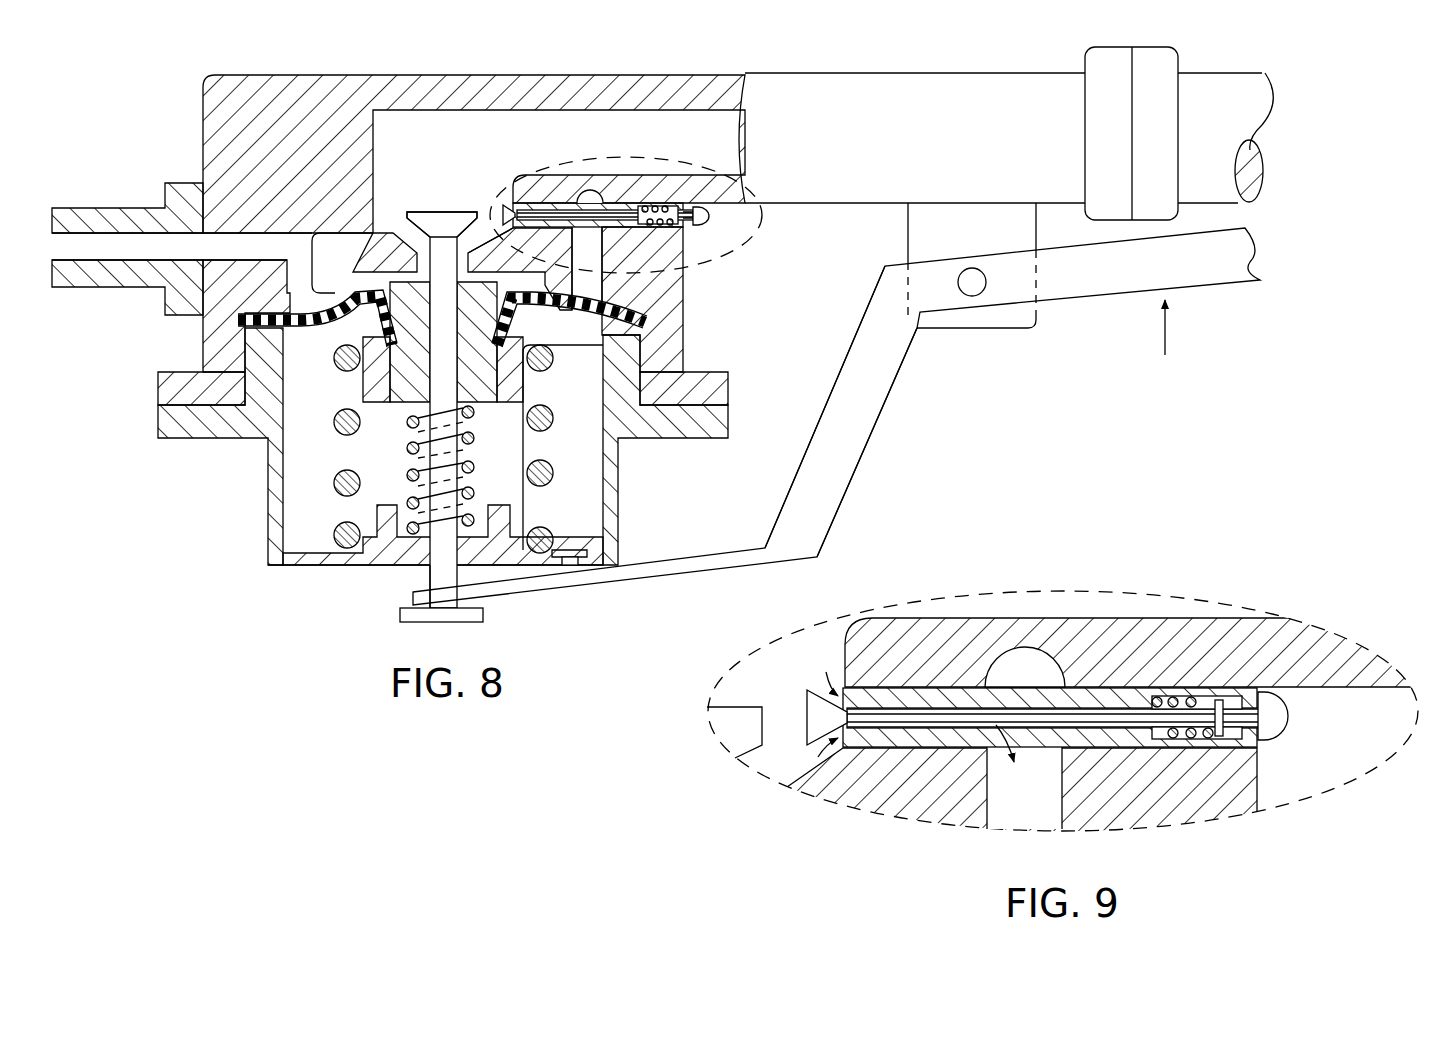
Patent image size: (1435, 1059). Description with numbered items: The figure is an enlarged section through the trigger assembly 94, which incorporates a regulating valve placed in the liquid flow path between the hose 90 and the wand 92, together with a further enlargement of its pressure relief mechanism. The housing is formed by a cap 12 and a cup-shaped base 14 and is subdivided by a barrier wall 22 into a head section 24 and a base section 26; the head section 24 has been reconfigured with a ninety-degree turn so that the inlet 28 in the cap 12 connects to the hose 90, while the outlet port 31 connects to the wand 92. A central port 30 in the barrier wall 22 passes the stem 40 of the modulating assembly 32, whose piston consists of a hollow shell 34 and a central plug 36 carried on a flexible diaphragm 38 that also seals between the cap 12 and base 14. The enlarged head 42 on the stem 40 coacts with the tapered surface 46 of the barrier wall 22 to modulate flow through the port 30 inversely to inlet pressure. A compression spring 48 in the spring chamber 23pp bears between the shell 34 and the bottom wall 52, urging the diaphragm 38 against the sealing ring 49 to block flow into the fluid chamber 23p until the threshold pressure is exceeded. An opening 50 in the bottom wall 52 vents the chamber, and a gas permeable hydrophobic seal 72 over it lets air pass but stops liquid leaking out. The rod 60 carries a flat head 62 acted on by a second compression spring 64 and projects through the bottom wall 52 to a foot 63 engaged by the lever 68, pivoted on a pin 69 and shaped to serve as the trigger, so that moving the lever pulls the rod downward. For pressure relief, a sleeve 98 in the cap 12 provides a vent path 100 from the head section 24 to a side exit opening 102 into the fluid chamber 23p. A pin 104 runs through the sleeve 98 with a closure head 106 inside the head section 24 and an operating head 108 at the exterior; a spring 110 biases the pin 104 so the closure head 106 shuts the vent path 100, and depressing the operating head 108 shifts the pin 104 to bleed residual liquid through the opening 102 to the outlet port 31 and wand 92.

In FIG. 8, the cap 12 is at (205, 130).
In FIG. 8, the base 14 is at (268, 517).
In FIG. 8, the barrier wall 22 is at (352, 260).
In FIG. 8, the fluid chamber 23p is at (590, 195).
In FIG. 8, the spring chamber 23pp is at (593, 505).
In FIG. 9, the spring chamber 23pp is at (1025, 818).
In FIG. 8, the head section 24 is at (429, 138).
In FIG. 8, the base section 26 is at (591, 430).
In FIG. 8, the inlet 28 is at (1005, 72).
In FIG. 8, the central port 30 is at (404, 245).
In FIG. 8, the outlet port 31 is at (223, 257).
In FIG. 8, the modulating assembly 32 is at (345, 378).
In FIG. 8, the hollow shell 34 is at (532, 389).
In FIG. 8, the central plug 36 is at (419, 322).
In FIG. 8, the diaphragm 38 is at (577, 337).
In FIG. 8, the stem 40 is at (453, 325).
In FIG. 8, the enlarged head 42 is at (430, 210).
In FIG. 8, the tapered surface 46 is at (493, 240).
In FIG. 8, the compression spring 48 is at (338, 538).
In FIG. 8, the sealing ring 49 is at (570, 300).
In FIG. 8, the vent opening 50 is at (572, 565).
In FIG. 8, the bottom wall 52 is at (330, 567).
In FIG. 8, the rod 60 is at (435, 583).
In FIG. 8, the flat head 62 is at (397, 430).
In FIG. 8, the foot 63 is at (483, 620).
In FIG. 8, the second compression spring 64 is at (545, 458).
In FIG. 8, the lever 68 is at (853, 440).
In FIG. 8, the pin 69 is at (972, 297).
In FIG. 8, the gas permeable hydrophobic seal 72 is at (570, 550).
In FIG. 8, the hose 90 is at (1240, 73).
In FIG. 8, the wand 92 is at (108, 208).
In FIG. 8, the trigger assembly 94 is at (624, 46).
In FIG. 8, the sleeve 98 is at (667, 204).
In FIG. 9, the sleeve 98 is at (930, 690).
In FIG. 9, the vent path 100 is at (913, 744).
In FIG. 9, the side exit opening 102 is at (1060, 750).
In FIG. 9, the pin 104 is at (1112, 716).
In FIG. 8, the closure head 106 is at (505, 207).
In FIG. 9, the closure head 106 is at (808, 720).
In FIG. 8, the operating head 108 is at (712, 228).
In FIG. 9, the operating head 108 is at (1292, 718).
In FIG. 9, the spring 110 is at (1193, 690).